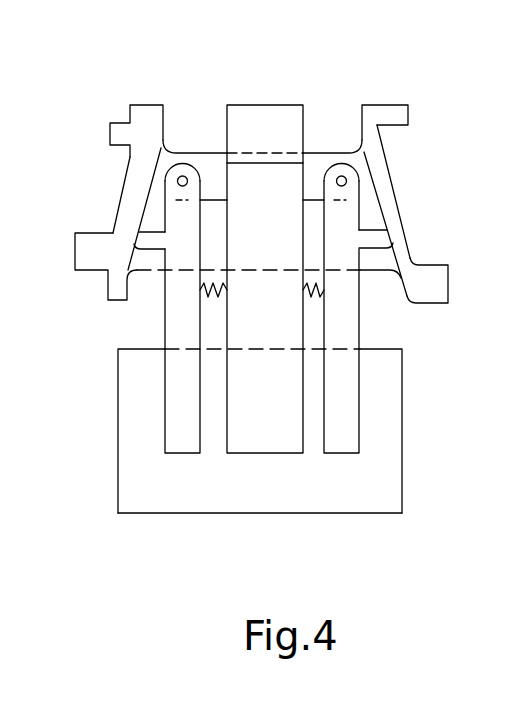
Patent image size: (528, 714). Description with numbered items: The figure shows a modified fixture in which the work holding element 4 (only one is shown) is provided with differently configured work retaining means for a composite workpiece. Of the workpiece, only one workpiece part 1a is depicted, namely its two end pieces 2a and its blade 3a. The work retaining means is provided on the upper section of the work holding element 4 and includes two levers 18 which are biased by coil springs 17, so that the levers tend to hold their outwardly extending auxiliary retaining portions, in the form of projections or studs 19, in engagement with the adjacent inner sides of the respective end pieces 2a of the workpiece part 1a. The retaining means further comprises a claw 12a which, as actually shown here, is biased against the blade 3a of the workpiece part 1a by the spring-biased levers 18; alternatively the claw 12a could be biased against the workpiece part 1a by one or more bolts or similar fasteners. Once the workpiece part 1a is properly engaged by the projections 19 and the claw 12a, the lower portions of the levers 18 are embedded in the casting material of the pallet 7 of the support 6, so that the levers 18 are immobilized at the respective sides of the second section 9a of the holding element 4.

The workpiece part 1a is at (414, 170).
The end pieces 2a is at (147, 118).
The blade 3a is at (146, 262).
The work holding element 4 is at (385, 309).
The support 6 is at (418, 474).
The pallet 7 is at (224, 500).
The second section 9a is at (266, 437).
The claw 12a is at (269, 122).
The coil springs 17 is at (208, 298).
The levers 18 is at (181, 432).
The projections 19 is at (145, 238).